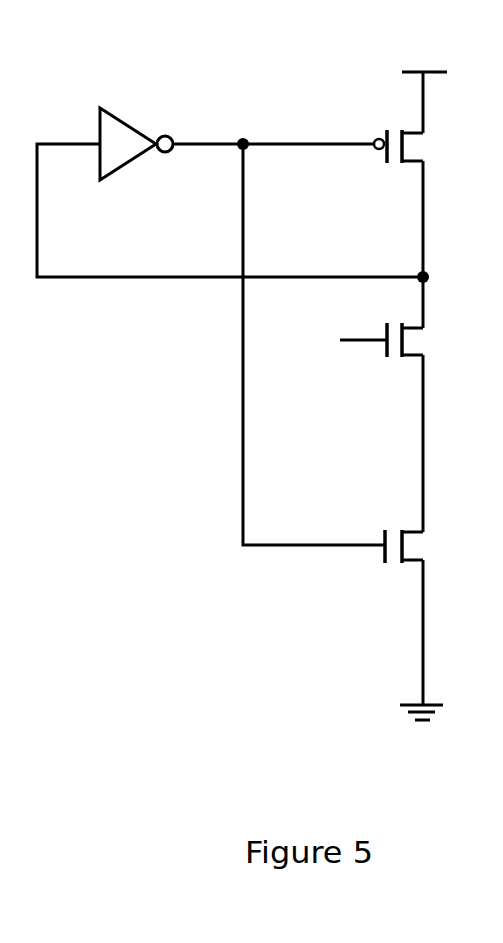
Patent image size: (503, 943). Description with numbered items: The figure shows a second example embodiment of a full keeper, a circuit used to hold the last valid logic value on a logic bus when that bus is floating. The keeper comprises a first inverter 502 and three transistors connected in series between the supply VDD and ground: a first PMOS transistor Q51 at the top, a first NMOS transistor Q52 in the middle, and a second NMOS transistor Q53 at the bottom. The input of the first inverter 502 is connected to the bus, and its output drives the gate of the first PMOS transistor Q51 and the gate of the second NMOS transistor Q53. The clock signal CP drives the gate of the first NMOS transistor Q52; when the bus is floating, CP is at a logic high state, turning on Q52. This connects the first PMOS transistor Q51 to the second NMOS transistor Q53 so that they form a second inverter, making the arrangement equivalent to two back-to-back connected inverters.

The first inverter 502 is at (142, 168).
The supply voltage rail VDD is at (417, 83).
The first PMOS transistor Q51 is at (428, 229).
The first NMOS transistor Q52 is at (435, 427).
The second NMOS transistor Q53 is at (433, 617).
The clock signal CP is at (342, 357).